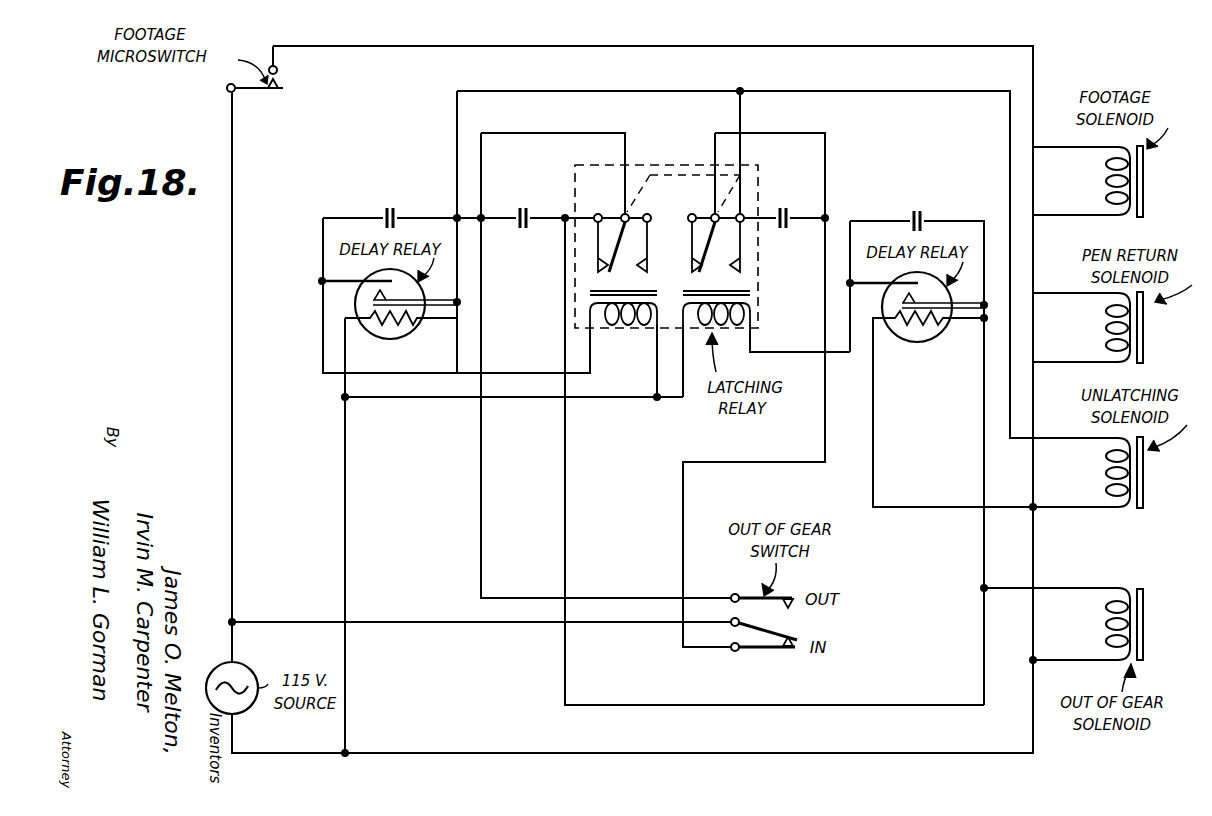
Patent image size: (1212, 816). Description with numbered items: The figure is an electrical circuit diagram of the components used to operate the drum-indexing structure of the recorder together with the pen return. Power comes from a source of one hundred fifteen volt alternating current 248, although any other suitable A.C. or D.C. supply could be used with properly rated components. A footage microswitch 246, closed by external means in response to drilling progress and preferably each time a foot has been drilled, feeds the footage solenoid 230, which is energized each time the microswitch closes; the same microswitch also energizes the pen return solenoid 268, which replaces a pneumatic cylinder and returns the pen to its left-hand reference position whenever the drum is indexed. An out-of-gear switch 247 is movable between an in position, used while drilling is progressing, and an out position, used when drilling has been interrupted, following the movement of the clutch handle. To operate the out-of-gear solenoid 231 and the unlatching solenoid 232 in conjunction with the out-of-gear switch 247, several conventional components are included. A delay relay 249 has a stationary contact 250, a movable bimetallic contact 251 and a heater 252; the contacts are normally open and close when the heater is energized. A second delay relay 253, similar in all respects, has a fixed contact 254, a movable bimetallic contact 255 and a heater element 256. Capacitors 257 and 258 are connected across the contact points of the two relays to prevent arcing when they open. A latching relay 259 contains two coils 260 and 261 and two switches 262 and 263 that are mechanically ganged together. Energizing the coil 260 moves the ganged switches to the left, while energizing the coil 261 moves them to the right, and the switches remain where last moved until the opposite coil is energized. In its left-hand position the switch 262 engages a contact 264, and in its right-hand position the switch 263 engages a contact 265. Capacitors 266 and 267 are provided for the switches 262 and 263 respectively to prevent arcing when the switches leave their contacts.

The footage solenoid 230 is at (1145, 200).
The out-of-gear solenoid 231 is at (1147, 601).
The unlatching solenoid 232 is at (1147, 505).
The footage microswitch 246 is at (281, 110).
The out-of-gear switch 247 is at (773, 652).
The source of 115 volt alternating current 248 is at (255, 662).
The delay relay 249 is at (418, 335).
The stationary contact 250 is at (345, 281).
The movable bimetallic contact 251 is at (373, 303).
The heater 252 is at (388, 336).
The delay relay 253 is at (922, 350).
The fixed contact 254 is at (850, 283).
The movable bimetallic contact 255 is at (950, 332).
The heater element 256 is at (922, 334).
The capacitor 257 is at (391, 205).
The capacitor 258 is at (921, 208).
The latching relay 259 is at (658, 162).
The coil 260 is at (632, 330).
The coil 261 is at (740, 330).
The switch 262 is at (614, 236).
The switch 263 is at (700, 236).
The contact 264 is at (598, 265).
The contact 265 is at (745, 265).
The capacitor 266 is at (524, 205).
The capacitor 267 is at (789, 205).
The pen return solenoid 268 is at (1147, 360).